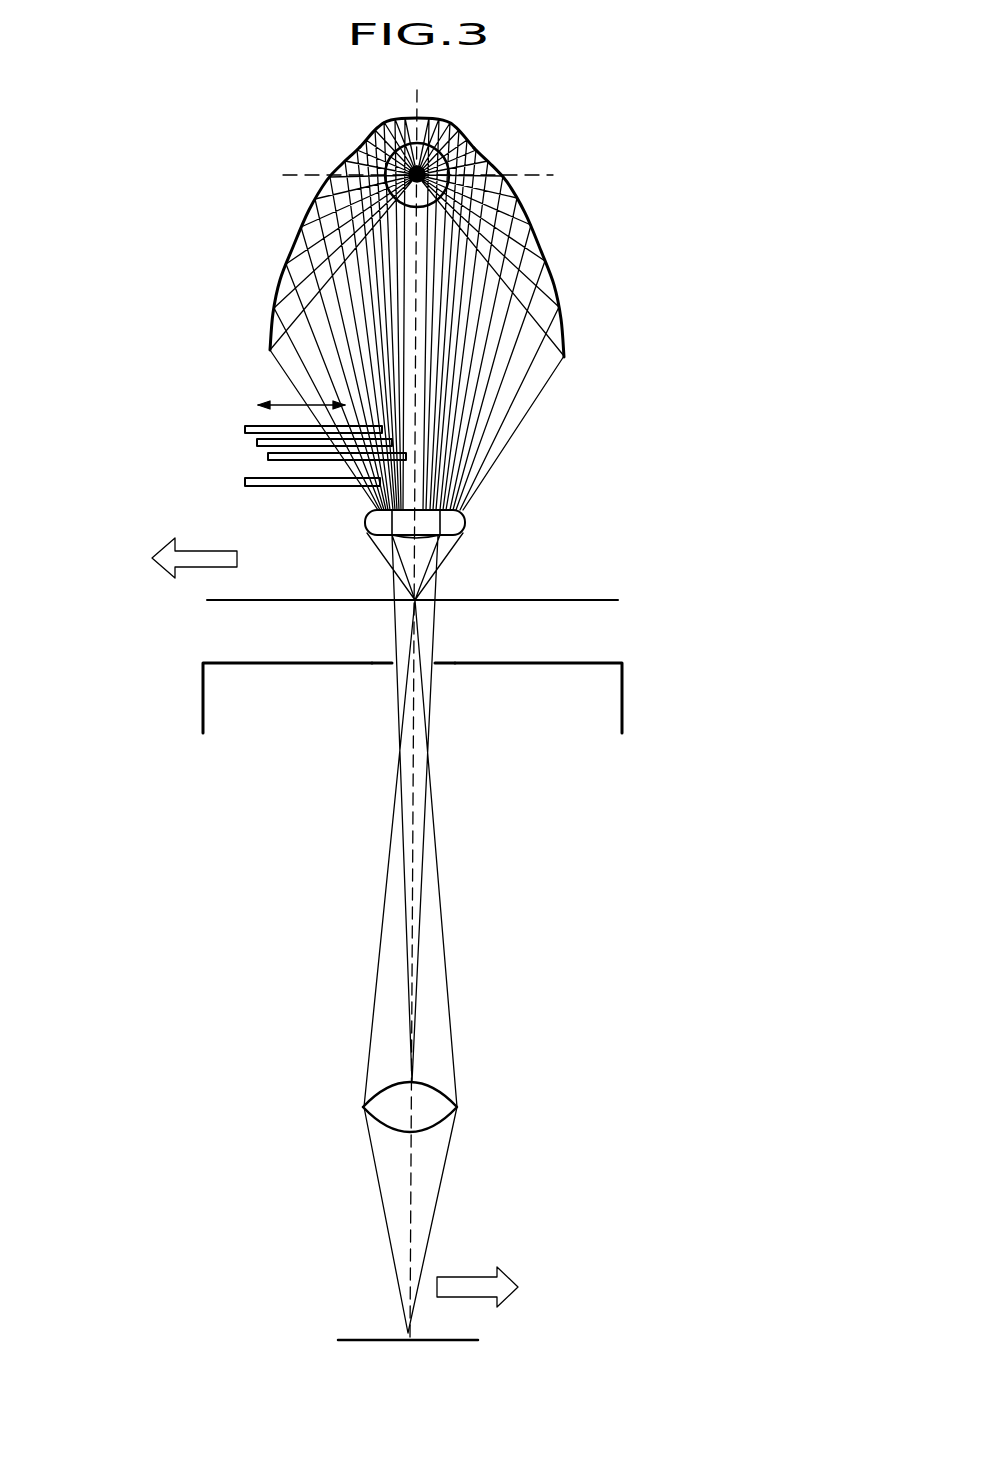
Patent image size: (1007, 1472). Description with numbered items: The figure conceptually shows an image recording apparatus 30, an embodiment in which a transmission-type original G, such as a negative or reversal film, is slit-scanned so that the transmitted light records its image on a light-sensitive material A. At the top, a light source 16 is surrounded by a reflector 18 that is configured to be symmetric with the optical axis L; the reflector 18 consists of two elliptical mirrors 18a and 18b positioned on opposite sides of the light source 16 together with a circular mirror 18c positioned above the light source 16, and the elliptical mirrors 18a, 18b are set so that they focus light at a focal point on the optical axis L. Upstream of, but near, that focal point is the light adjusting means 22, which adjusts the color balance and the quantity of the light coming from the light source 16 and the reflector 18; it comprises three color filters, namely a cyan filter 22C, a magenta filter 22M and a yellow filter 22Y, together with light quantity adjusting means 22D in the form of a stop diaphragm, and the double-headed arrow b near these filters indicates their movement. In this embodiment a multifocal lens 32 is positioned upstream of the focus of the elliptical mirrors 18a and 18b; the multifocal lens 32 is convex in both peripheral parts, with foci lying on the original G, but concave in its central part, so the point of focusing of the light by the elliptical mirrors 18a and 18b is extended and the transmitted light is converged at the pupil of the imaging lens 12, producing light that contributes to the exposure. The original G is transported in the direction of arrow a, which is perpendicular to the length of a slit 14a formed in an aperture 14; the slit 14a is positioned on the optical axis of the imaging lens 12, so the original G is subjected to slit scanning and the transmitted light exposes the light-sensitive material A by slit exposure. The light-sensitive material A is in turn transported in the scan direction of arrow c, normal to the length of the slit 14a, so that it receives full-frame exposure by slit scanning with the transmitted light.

The imaging lens 12 is at (444, 1083).
The aperture 14 is at (412, 732).
The slit 14a is at (386, 674).
The light source 16 is at (418, 210).
The reflector 18 is at (458, 215).
The elliptical mirror 18a is at (562, 326).
The elliptical mirror 18b is at (294, 238).
The circular mirror 18c is at (448, 120).
The light adjusting means 22 is at (242, 427).
The cyan filter 22C is at (245, 430).
The magenta filter 22M is at (257, 443).
The yellow filter 22Y is at (268, 457).
The light quantity adjusting means 22D is at (283, 488).
The image recording apparatus 30 is at (700, 252).
The multifocal lens 32 is at (467, 519).
The direction of transport of the original a is at (190, 568).
The filter movement direction b is at (288, 400).
The scan direction of the light-sensitive material c is at (466, 1270).
The light-sensitive material A is at (362, 1338).
The original G is at (550, 600).
The optical axis L is at (415, 1170).